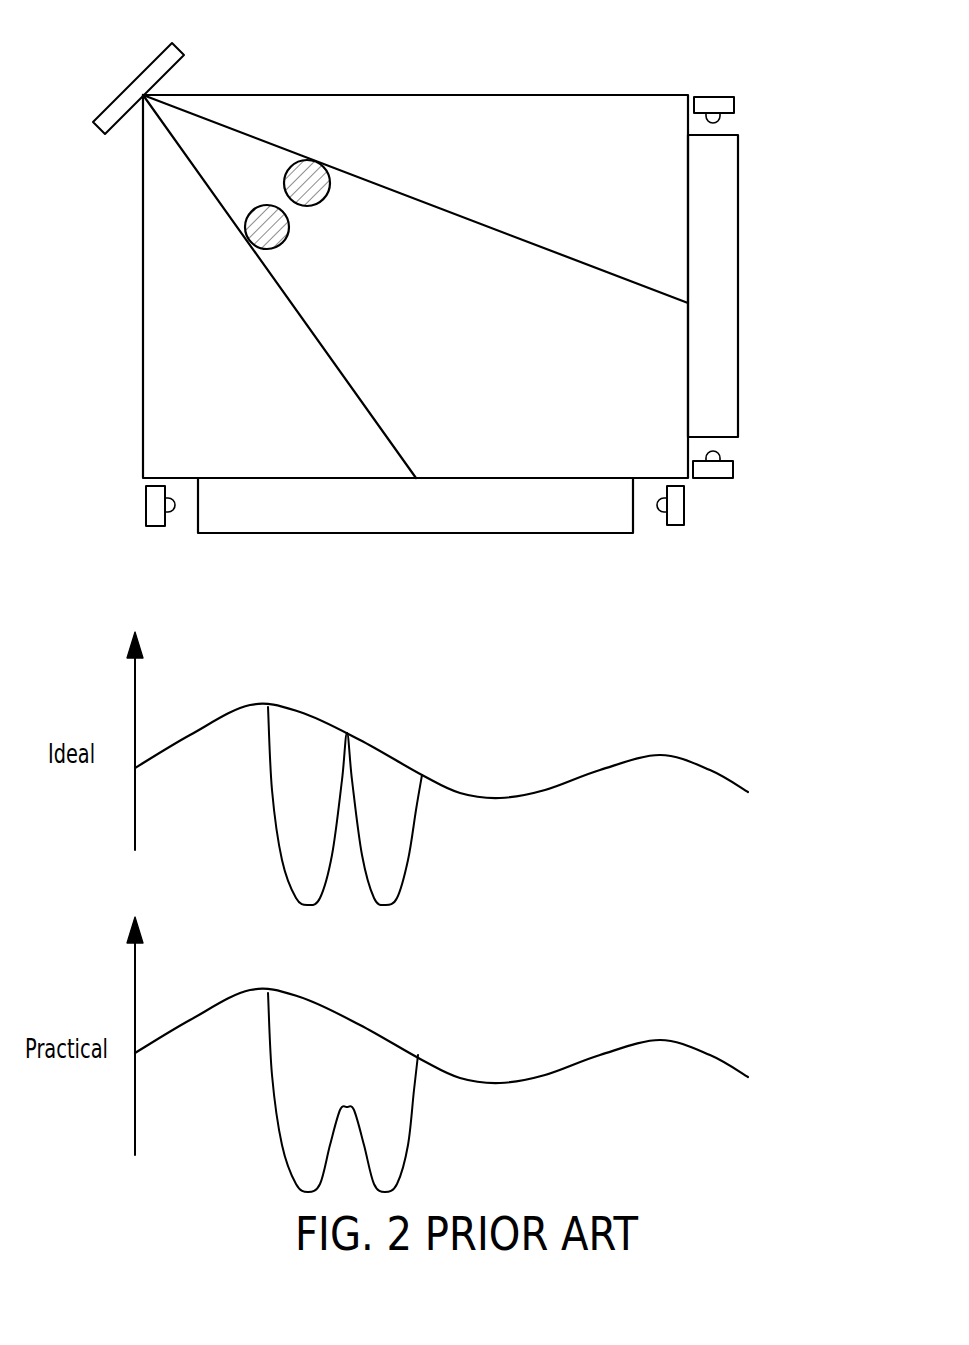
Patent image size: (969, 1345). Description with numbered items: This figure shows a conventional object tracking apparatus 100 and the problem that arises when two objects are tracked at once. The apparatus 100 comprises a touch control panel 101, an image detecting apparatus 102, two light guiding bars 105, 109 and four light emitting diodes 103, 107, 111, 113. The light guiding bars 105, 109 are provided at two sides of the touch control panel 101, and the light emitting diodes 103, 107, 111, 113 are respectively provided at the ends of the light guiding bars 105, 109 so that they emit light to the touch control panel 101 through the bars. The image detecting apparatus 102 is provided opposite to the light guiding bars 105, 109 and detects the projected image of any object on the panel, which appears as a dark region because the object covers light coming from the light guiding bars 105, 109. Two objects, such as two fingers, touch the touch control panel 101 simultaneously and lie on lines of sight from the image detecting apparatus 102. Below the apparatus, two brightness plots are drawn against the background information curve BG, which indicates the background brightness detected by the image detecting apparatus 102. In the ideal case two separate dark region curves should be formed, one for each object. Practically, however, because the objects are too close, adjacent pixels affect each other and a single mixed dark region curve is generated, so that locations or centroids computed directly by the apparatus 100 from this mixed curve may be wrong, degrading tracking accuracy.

The object tracking apparatus 100 is at (603, 64).
The touch control panel 101 is at (143, 265).
The image detecting apparatus 102 is at (179, 47).
The light emitting diode 103 is at (716, 94).
The light guiding bar 105 is at (740, 200).
The light emitting diode 107 is at (735, 470).
The light guiding bar 109 is at (533, 533).
The light emitting diode 111 is at (684, 506).
The light emitting diode 113 is at (146, 504).
The background information curve BG is at (461, 893).